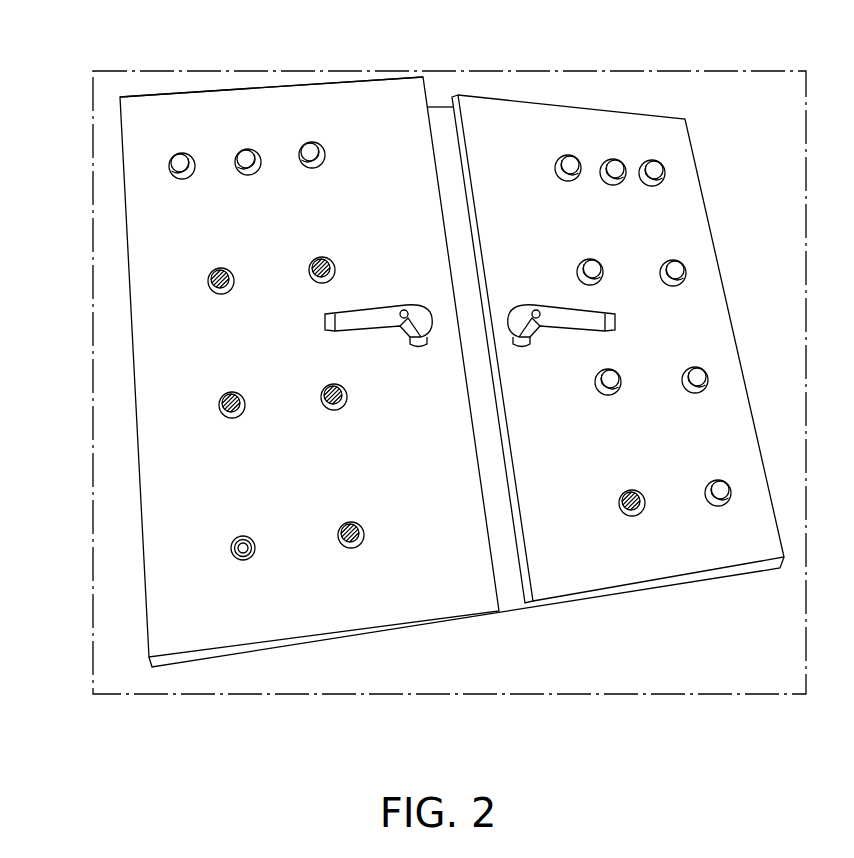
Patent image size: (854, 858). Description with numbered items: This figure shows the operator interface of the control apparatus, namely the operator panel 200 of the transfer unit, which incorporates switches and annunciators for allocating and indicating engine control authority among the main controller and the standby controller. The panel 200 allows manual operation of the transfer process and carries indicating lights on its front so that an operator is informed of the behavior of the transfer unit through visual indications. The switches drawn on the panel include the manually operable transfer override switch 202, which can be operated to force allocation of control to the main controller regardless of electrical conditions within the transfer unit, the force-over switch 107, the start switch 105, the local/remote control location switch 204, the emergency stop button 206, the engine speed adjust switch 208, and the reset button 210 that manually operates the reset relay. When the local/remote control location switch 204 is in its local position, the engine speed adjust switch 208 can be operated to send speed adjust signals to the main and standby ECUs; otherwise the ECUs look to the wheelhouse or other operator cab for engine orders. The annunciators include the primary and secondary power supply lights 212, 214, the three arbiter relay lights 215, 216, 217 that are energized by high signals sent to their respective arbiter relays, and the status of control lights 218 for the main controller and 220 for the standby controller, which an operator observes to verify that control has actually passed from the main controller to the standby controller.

The operator panel 200 is at (393, 87).
The start switch 105 is at (323, 257).
The force-over switch 107 is at (221, 268).
The transfer override switch 202 is at (232, 392).
The local/remote control location switch 204 is at (351, 522).
The emergency stop button 206 is at (308, 143).
The engine speed adjust switch 208 is at (347, 397).
The reset button 210 is at (717, 480).
The primary power supply light 212 is at (172, 156).
The secondary power supply light 214 is at (243, 150).
The arbiter relay light 215 is at (566, 155).
The arbiter relay light 216 is at (621, 161).
The arbiter relay light 217 is at (661, 164).
The status of control light (main) 218 is at (599, 263).
The status of control light (standby) 220 is at (682, 264).